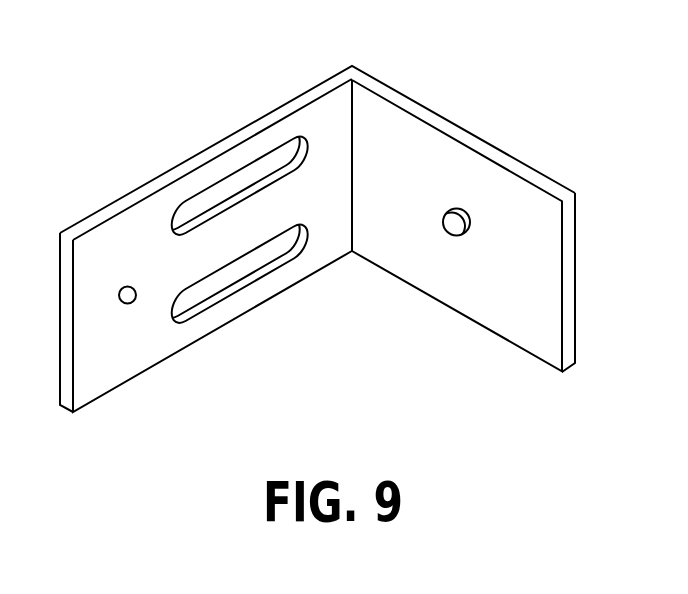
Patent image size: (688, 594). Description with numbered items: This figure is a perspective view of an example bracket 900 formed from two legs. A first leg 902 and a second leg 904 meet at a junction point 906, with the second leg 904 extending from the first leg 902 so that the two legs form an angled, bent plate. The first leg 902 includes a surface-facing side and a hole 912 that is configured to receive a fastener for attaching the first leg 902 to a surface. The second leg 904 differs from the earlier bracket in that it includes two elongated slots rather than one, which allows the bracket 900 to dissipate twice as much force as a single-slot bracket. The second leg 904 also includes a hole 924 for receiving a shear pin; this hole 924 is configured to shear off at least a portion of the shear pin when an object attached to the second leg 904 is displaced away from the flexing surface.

The bracket 900 is at (80, 58).
The first leg 902 is at (467, 132).
The second leg 904 is at (240, 315).
The junction point 906 is at (367, 97).
The hole 912 is at (456, 236).
The hole 924 is at (122, 289).